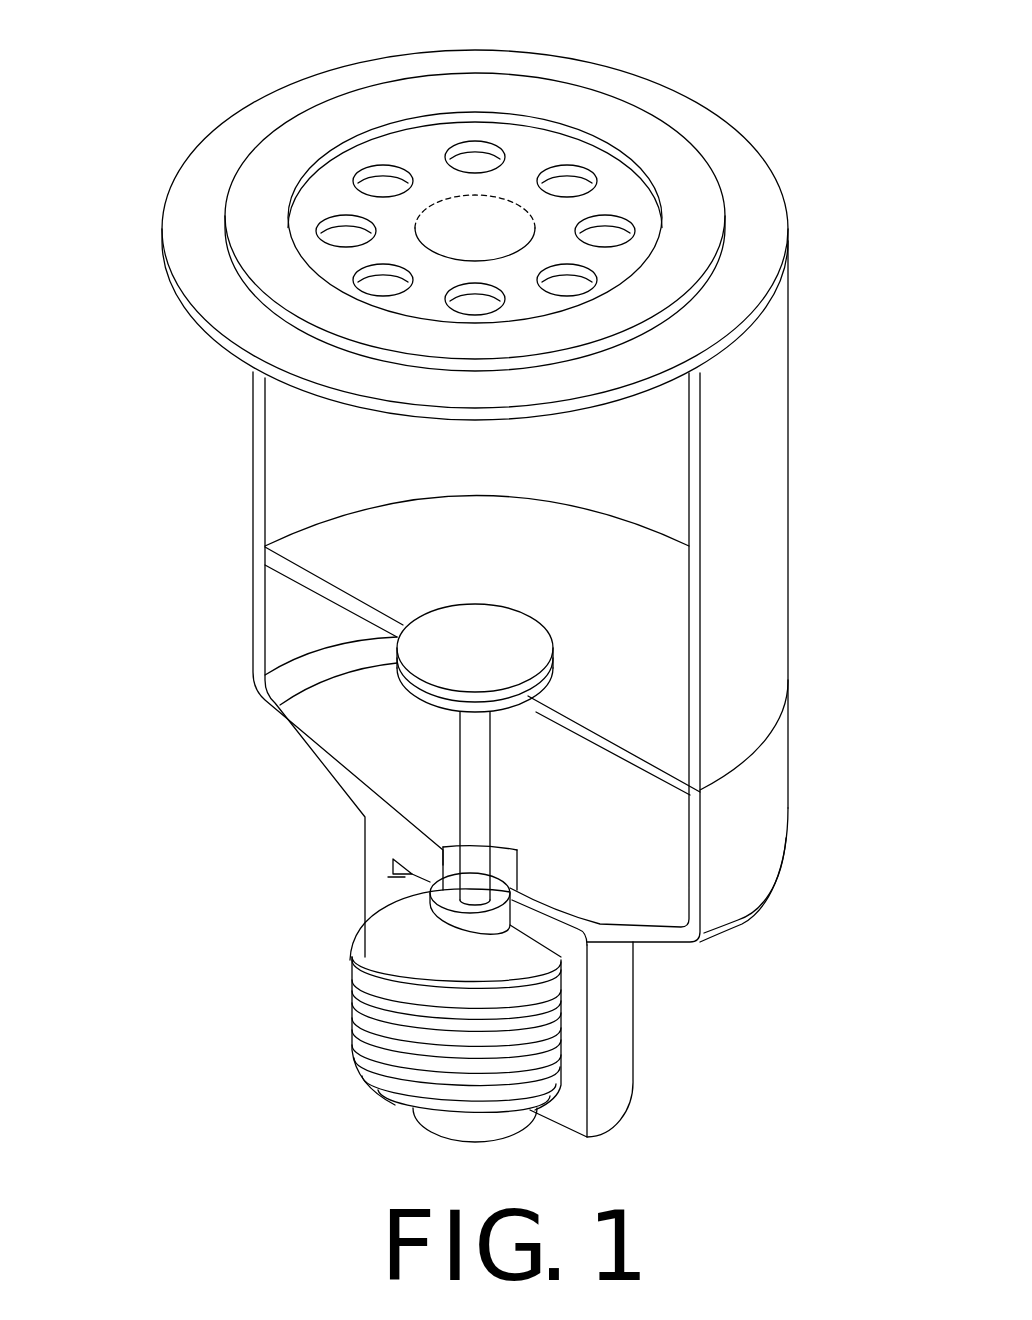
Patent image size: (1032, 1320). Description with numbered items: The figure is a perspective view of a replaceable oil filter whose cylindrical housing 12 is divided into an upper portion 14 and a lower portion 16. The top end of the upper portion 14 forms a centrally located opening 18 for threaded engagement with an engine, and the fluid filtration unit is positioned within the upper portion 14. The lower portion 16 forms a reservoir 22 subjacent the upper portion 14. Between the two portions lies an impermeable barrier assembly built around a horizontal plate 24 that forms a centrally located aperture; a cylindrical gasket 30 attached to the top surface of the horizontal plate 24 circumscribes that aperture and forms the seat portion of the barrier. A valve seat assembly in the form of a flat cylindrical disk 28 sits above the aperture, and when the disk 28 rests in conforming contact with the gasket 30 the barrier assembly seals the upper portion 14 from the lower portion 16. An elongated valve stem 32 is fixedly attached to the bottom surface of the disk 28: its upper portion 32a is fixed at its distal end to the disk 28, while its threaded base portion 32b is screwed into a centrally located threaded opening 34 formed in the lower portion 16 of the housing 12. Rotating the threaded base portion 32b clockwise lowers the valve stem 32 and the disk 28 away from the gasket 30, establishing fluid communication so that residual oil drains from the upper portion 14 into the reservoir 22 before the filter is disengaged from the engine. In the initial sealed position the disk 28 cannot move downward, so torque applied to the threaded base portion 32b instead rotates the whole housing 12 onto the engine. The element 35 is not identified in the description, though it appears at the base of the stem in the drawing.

The cylindrical housing 12 is at (230, 461).
The upper portion 14 is at (774, 548).
The lower portion 16 is at (762, 821).
The centrally located opening 18 is at (702, 124).
The reservoir 22 is at (647, 902).
The horizontal plate 24 is at (628, 621).
The flat cylindrical disk 28 is at (465, 640).
The cylindrical gasket 30 is at (437, 703).
The elongated valve stem 32 is at (443, 782).
The upper portion of the valve stem 32a is at (475, 797).
The threaded base portion 32b is at (370, 1020).
The threaded opening 34 is at (543, 1133).
The nut 35 is at (430, 893).